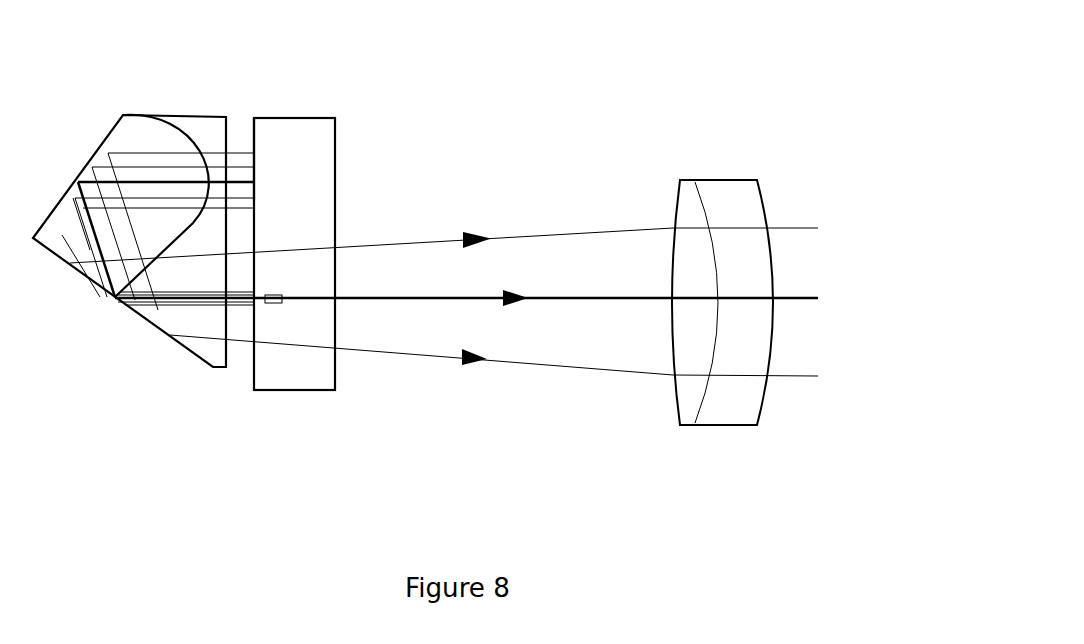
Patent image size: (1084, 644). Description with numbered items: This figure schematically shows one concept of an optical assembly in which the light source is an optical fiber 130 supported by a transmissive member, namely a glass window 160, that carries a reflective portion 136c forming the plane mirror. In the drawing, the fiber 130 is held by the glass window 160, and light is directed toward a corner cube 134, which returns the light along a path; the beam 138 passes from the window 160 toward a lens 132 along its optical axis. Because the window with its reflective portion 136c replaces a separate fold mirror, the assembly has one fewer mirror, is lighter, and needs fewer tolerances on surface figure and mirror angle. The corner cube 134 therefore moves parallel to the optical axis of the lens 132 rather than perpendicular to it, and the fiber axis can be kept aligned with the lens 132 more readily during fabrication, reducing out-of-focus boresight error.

The optical fiber 130 is at (267, 303).
The lens 132 is at (733, 192).
The corner cube 134 is at (207, 353).
The reflective portion 136c is at (252, 157).
The optical beam 138 is at (548, 298).
The glass window 160 is at (318, 228).